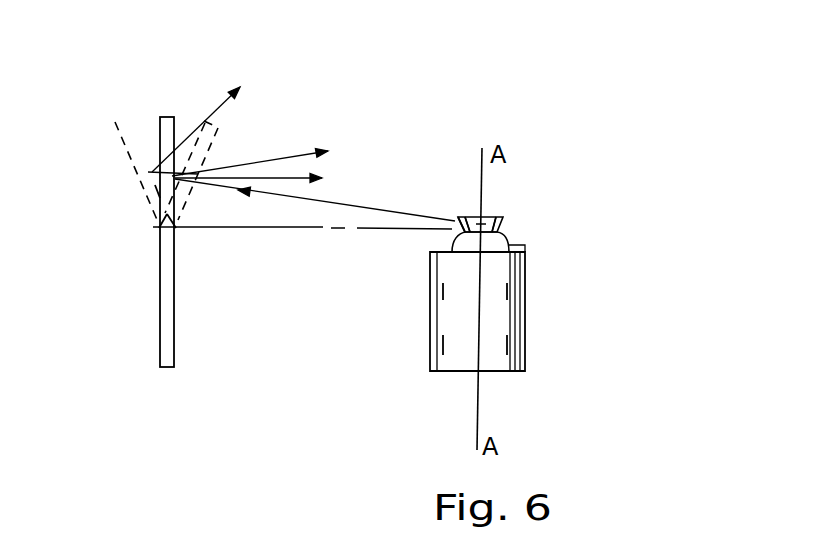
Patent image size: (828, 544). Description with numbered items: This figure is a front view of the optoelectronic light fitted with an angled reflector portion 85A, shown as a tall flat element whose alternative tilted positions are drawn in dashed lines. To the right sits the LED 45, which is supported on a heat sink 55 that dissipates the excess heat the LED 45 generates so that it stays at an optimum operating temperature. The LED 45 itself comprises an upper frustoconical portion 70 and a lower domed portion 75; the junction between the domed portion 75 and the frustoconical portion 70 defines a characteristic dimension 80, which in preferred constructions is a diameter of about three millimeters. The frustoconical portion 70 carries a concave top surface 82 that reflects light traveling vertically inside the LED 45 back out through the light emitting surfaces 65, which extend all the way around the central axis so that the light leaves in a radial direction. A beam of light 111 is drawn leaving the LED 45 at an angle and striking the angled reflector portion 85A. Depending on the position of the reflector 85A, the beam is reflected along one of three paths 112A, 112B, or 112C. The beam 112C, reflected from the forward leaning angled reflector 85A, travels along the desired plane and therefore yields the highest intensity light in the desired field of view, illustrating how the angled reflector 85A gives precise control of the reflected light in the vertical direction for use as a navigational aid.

The LED 45 is at (492, 261).
The heat sink 55 is at (447, 272).
The light emitting surfaces 65 is at (503, 221).
The upper frustoconical portion 70 is at (455, 221).
The lower domed portion 75 is at (512, 250).
The characteristic dimension 80 is at (465, 216).
The concave top surface 82 is at (500, 203).
The angled reflector portion 85A is at (163, 250).
The beam of light 111 is at (297, 200).
The first reflected path 112A is at (217, 123).
The second reflected path 112B is at (258, 161).
The third reflected path 112C is at (290, 177).